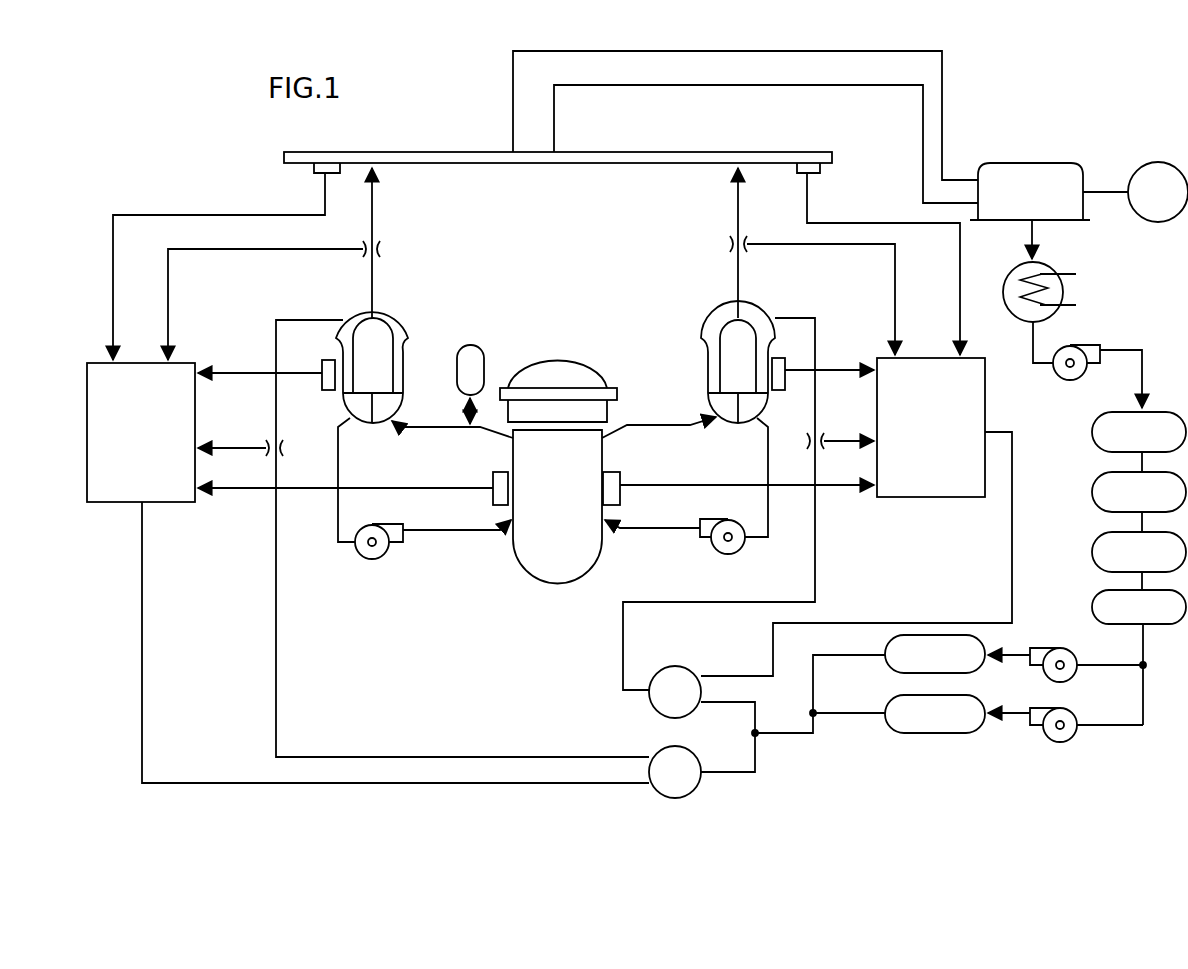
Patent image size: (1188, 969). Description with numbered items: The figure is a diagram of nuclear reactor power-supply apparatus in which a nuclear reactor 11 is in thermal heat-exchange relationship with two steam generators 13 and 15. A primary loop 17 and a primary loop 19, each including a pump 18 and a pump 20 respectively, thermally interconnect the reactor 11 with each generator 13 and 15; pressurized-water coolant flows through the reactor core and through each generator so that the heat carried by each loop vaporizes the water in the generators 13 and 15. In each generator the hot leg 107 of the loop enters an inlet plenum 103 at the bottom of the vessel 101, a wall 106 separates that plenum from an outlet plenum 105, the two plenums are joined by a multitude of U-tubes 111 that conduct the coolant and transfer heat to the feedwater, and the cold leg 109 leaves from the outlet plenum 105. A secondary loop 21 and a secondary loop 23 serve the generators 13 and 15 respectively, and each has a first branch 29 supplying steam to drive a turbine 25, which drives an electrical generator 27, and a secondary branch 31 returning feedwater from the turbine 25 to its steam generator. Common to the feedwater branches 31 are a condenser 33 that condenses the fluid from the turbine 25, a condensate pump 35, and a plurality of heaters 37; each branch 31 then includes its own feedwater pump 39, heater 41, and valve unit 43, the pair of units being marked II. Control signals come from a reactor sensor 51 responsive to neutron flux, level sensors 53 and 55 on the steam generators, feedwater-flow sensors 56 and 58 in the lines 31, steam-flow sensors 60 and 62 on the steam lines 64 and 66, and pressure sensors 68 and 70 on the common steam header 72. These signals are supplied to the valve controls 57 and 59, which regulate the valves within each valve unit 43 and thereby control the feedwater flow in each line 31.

The nuclear reactor 11 is at (530, 575).
The steam generator 13 is at (400, 302).
The steam generator 15 is at (766, 302).
The primary loop 17 is at (430, 430).
The pump 18 is at (370, 553).
The primary loop 19 is at (660, 424).
The pump 20 is at (736, 552).
The secondary loop 21 is at (967, 62).
The secondary loop 23 is at (766, 144).
The turbine 25 is at (1002, 162).
The electrical generator 27 is at (1150, 163).
The first branch 29 is at (691, 60).
The secondary branch 31 is at (1142, 375).
The condenser 33 is at (1044, 263).
The condensate pump 35 is at (1082, 345).
The heaters 37 is at (1092, 449).
The feedwater pump 39 is at (1068, 681).
The heater 41 is at (895, 672).
The valve unit 43 is at (577, 615).
The sensor 51 is at (620, 495).
The sensor 53 is at (322, 385).
The sensor 55 is at (778, 392).
The sensor 56 is at (285, 448).
The valve control 57 is at (165, 503).
The sensor 58 is at (826, 446).
The valve control 59 is at (918, 498).
The sensor 60 is at (382, 249).
The sensor 62 is at (728, 244).
The steam line 64 is at (374, 208).
The steam line 66 is at (736, 200).
The sensor 68 is at (318, 170).
The sensor 70 is at (812, 170).
The steam header 72 is at (688, 150).
The vessel 101 is at (700, 313).
The inlet plenum 103 is at (718, 405).
The outlet plenum 105 is at (398, 410).
The wall 106 is at (750, 410).
The hot leg 107 is at (672, 426).
The cold leg 109 is at (338, 462).
The U-tubes 111 is at (390, 332).
The feedwater valve pair II is at (692, 712).